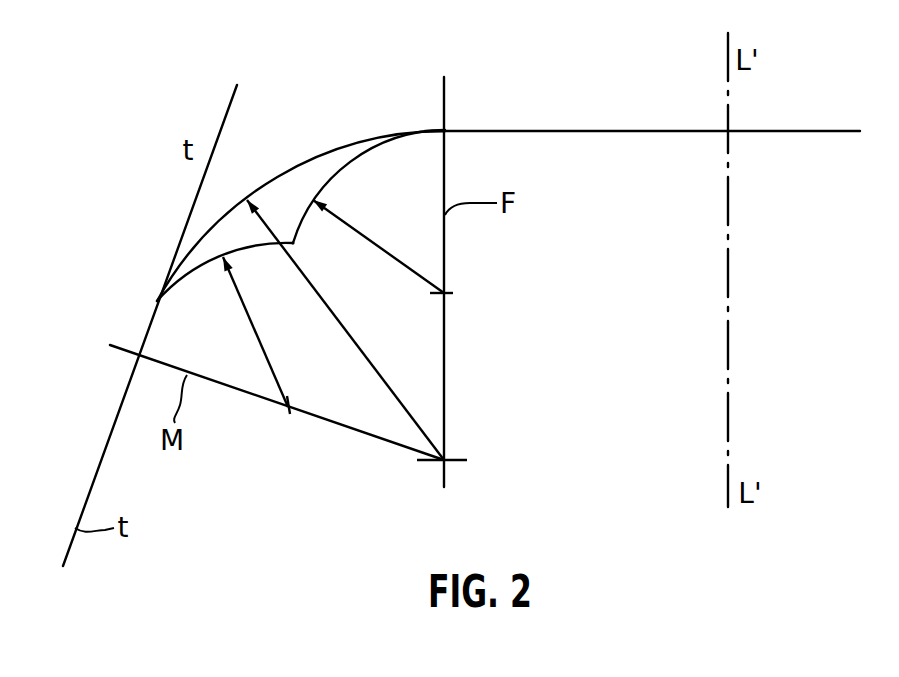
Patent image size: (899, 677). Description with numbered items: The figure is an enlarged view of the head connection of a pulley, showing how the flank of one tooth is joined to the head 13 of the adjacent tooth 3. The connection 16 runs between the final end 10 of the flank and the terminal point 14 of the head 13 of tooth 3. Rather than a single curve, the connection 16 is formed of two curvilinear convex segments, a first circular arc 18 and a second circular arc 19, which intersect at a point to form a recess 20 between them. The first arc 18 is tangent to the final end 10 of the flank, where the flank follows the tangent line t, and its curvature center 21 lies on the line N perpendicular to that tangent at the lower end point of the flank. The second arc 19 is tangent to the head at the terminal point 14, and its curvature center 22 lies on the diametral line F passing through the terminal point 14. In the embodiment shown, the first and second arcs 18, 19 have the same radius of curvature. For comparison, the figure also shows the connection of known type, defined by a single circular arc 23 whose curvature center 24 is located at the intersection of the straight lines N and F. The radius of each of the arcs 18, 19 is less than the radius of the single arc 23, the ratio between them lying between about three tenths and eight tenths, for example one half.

The tooth 3 is at (745, 157).
The final end of flank 10 is at (137, 354).
The head 13 is at (660, 130).
The terminal point of head 14 is at (462, 113).
The connection 16 is at (291, 204).
The first circular arc 18 is at (187, 282).
The second circular arc 19 is at (343, 167).
The recess 20 is at (293, 243).
The curvature center of first arc 21 is at (256, 354).
The curvature center of second arc 22 is at (399, 246).
The single circular arc 23 is at (287, 172).
The curvature center of single arc 24 is at (376, 330).